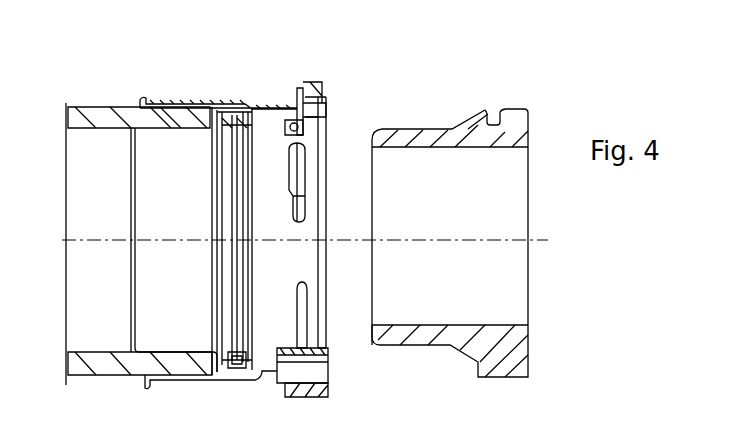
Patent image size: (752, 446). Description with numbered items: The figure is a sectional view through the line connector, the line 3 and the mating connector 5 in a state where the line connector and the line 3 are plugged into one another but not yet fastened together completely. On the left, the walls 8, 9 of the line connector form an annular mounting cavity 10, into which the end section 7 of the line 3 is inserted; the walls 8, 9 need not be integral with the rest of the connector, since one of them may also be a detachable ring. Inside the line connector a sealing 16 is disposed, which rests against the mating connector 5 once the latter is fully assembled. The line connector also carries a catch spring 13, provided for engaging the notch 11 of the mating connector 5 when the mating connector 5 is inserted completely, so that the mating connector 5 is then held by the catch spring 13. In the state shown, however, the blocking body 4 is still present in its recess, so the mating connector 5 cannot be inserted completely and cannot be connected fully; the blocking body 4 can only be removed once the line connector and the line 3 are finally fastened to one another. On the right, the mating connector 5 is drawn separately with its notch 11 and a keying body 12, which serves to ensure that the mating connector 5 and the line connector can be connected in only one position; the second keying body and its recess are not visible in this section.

The line 3 is at (85, 112).
The blocking body 4 is at (322, 370).
The mating connector 5 is at (462, 133).
The end section 7 is at (183, 367).
The wall 8 is at (148, 140).
The wall 9 is at (185, 100).
The annular mounting cavity 10 is at (195, 118).
The notch 11 is at (493, 122).
The keying body 12 is at (502, 355).
The catch spring 13 is at (297, 103).
The sealing 16 is at (236, 362).